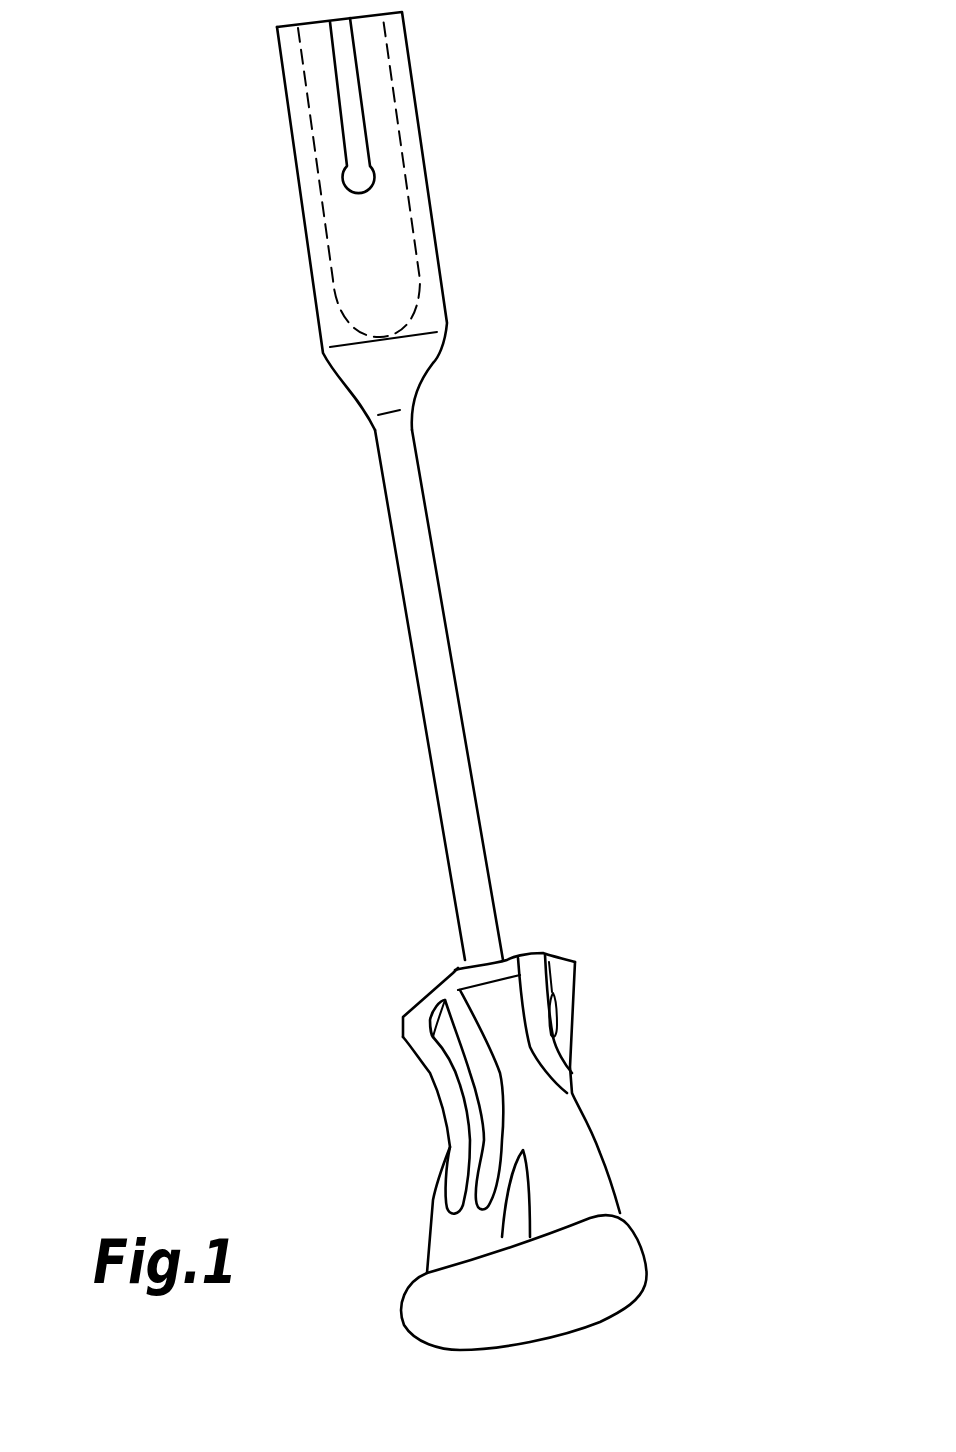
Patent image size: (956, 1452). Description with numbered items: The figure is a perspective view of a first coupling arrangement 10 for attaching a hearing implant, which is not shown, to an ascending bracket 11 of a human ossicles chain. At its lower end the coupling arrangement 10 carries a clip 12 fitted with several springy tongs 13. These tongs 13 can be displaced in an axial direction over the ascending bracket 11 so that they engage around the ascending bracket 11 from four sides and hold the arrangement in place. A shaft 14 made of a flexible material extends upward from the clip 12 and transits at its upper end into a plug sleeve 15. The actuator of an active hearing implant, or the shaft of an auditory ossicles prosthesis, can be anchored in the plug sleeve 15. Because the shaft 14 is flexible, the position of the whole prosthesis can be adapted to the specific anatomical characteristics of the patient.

The coupling arrangement 10 is at (589, 636).
The ascending bracket 11 is at (590, 1167).
The clip 12 is at (584, 942).
The springy tongs 13 is at (425, 1043).
The shaft 14 is at (450, 757).
The plug sleeve 15 is at (427, 243).